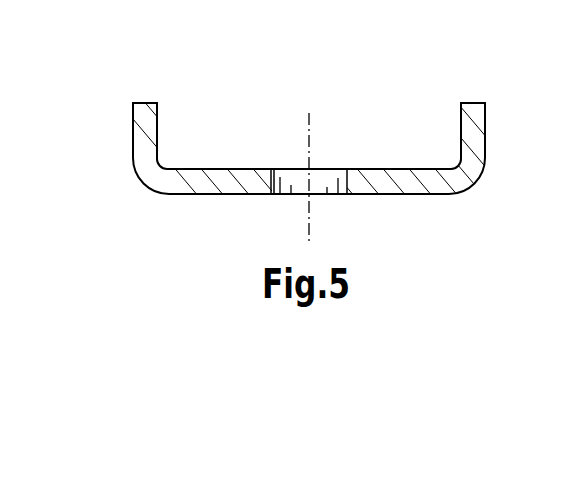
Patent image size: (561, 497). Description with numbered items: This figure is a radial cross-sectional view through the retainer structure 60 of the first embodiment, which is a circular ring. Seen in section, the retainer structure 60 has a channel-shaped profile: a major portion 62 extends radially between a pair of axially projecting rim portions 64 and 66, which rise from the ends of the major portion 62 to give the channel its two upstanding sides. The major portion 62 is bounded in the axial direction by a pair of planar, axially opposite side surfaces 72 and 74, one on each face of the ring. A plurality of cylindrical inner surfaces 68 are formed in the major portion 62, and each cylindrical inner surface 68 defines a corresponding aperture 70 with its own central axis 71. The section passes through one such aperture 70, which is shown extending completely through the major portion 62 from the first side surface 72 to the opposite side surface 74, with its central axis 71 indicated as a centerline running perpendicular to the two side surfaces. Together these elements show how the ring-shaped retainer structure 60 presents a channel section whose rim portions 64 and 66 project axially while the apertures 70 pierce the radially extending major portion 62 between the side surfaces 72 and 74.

The retainer structure 60 is at (131, 79).
The major portion 62 is at (223, 180).
The rim portion 64 is at (146, 120).
The rim portion 66 is at (475, 115).
The cylindrical inner surface 68 is at (278, 194).
The aperture 70 is at (282, 151).
The central axis 71 is at (310, 138).
The side surface 72 is at (388, 168).
The side surface 74 is at (398, 196).